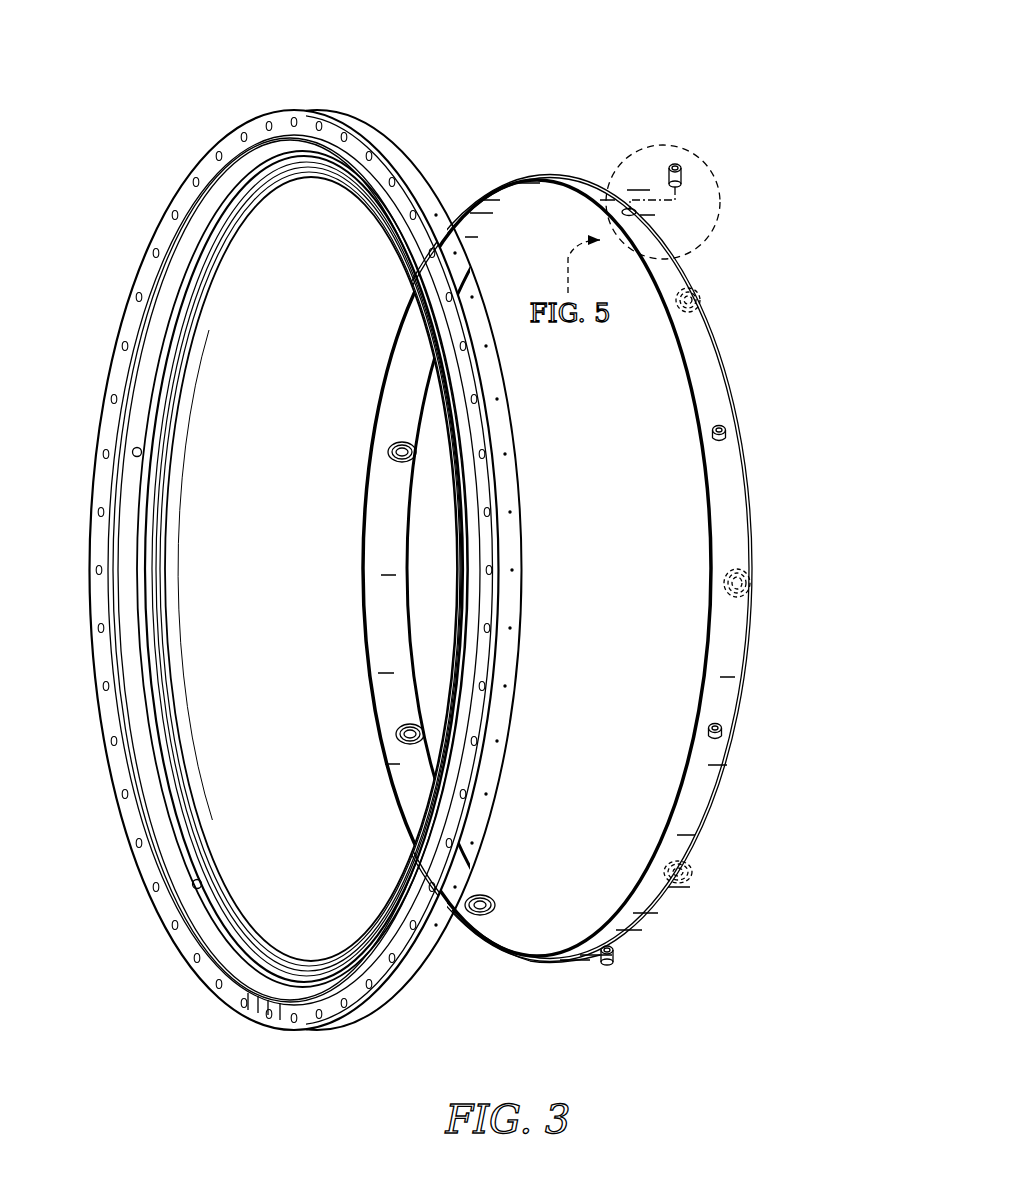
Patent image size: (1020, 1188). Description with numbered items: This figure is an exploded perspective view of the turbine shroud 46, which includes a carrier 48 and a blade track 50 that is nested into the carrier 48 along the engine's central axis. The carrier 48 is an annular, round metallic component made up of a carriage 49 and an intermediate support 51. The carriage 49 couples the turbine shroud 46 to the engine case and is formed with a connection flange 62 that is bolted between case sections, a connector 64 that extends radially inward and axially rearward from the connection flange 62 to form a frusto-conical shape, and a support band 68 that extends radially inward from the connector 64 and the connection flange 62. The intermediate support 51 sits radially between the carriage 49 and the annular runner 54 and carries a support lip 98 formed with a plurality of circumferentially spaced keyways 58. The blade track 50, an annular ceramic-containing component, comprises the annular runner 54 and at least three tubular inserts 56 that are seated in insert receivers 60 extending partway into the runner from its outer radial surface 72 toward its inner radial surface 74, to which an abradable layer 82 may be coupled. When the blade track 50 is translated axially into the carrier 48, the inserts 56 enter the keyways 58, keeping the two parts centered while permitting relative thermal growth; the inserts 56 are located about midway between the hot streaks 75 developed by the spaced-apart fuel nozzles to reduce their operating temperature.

The turbine shroud 46 is at (612, 80).
The carrier 48 is at (345, 100).
The carriage 49 is at (212, 178).
The blade track 50 is at (592, 138).
The intermediate support 51 is at (173, 305).
The annular runner 54 is at (480, 192).
The tubular inserts 56 is at (683, 171).
The keyways 58 is at (346, 209).
The insert receivers 60 is at (622, 212).
The connection flange 62 is at (181, 197).
The connector 64 is at (274, 150).
The support band 68 is at (282, 184).
The outer radial surface 72 is at (640, 897).
The inner radial surface 74 is at (478, 925).
The hot streaks 75 is at (565, 171).
The abradable layer 82 is at (528, 957).
The support lip 98 is at (133, 508).